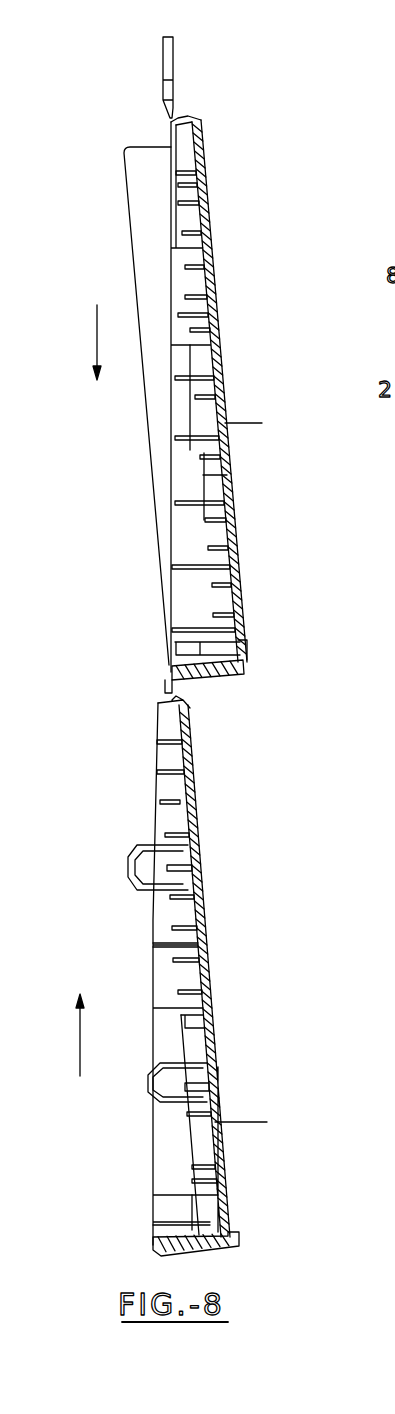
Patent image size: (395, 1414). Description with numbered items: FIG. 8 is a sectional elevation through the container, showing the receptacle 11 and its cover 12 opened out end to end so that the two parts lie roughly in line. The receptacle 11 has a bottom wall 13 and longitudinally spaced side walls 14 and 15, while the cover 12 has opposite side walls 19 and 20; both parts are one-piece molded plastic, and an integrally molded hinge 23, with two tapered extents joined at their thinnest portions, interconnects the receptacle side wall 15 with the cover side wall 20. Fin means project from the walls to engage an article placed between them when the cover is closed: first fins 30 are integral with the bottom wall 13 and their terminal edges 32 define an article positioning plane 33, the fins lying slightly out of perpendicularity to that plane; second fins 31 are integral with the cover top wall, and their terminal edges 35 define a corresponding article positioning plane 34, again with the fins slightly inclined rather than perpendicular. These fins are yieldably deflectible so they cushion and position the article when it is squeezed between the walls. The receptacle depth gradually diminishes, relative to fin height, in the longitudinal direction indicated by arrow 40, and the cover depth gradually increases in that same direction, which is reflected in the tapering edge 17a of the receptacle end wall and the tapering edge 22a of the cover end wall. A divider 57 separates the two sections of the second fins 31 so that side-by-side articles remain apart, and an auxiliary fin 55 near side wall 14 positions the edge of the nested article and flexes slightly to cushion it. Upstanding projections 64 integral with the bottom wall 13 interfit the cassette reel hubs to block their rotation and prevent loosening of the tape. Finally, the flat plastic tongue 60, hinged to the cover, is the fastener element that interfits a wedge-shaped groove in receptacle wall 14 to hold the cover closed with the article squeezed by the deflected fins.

The tongue 60 is at (163, 57).
The cover side wall 19 is at (178, 122).
The cover 12 is at (226, 248).
The tapering edge 22a is at (124, 230).
The direction arrow 40 is at (97, 322).
The terminal edges of second fins 35 is at (192, 421).
The second fins 31 is at (214, 415).
The article positioning plane 34 is at (190, 448).
The divider 57 is at (193, 648).
The cover side wall 20 is at (245, 665).
The hinge 23 is at (168, 681).
The receptacle side wall 15 is at (187, 703).
The receptacle 11 is at (210, 893).
The bottom wall 13 is at (207, 975).
The upstanding projections 64 is at (128, 862).
The tapering edge 17a is at (155, 947).
The terminal edges of first fins 32 is at (180, 992).
The first fins 30 is at (210, 1037).
The article positioning plane 33 is at (213, 1166).
The auxiliary fin 55 is at (190, 1230).
The receptacle side wall 14 is at (205, 1254).